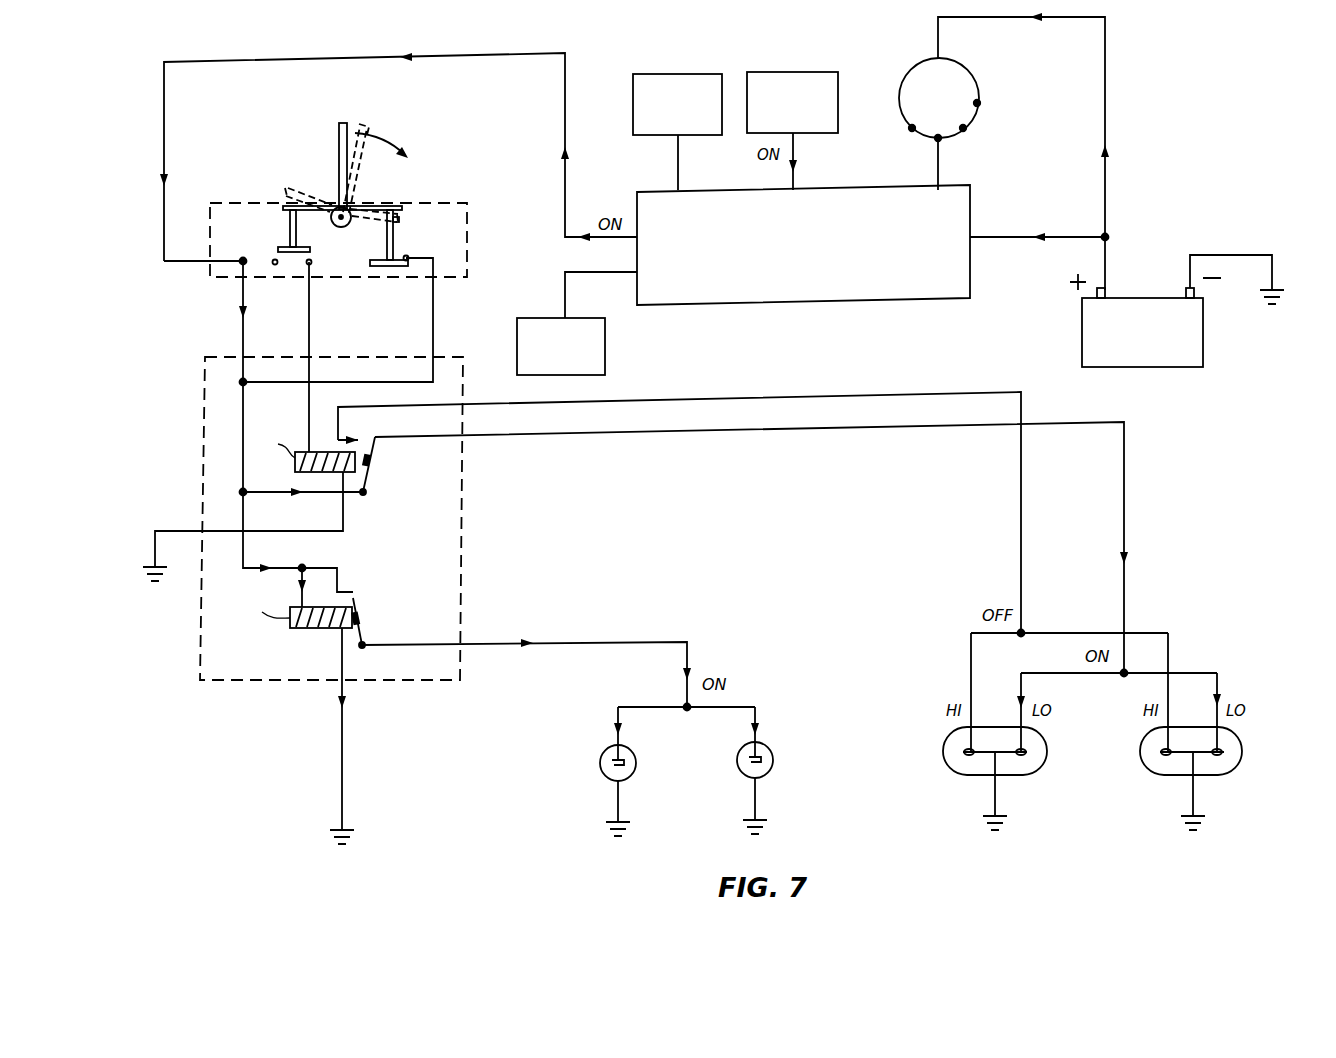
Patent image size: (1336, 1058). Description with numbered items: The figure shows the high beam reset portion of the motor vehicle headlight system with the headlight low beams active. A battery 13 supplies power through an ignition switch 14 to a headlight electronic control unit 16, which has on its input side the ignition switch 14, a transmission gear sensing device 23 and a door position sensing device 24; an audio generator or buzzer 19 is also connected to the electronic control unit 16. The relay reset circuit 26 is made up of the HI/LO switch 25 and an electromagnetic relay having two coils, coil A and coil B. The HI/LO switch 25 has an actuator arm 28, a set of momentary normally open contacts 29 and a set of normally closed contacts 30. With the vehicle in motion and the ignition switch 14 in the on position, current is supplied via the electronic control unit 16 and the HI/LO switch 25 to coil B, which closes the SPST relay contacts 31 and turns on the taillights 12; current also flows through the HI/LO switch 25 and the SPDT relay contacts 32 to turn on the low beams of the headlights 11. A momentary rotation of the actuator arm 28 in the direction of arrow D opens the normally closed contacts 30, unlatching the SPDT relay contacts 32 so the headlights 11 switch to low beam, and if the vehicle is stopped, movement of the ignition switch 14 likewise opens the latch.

The headlights 11 is at (946, 764).
The taillights 12 is at (634, 750).
The battery 13 is at (1152, 368).
The ignition switch 14 is at (920, 62).
The headlight electronic control unit 16 is at (840, 302).
The audio generator (buzzer) 19 is at (606, 356).
The transmission gear sensing device 23 is at (808, 136).
The door position sensing device 24 is at (665, 136).
The HI/LO switch 25 is at (425, 207).
The relay reset circuit 26 is at (462, 600).
The actuator arm 28 is at (338, 152).
The momentary normally open contacts 29 is at (311, 265).
The normally closed contacts 30 is at (408, 262).
The SPST relay contacts 31 is at (360, 614).
The SPDT relay contacts 32 is at (374, 463).